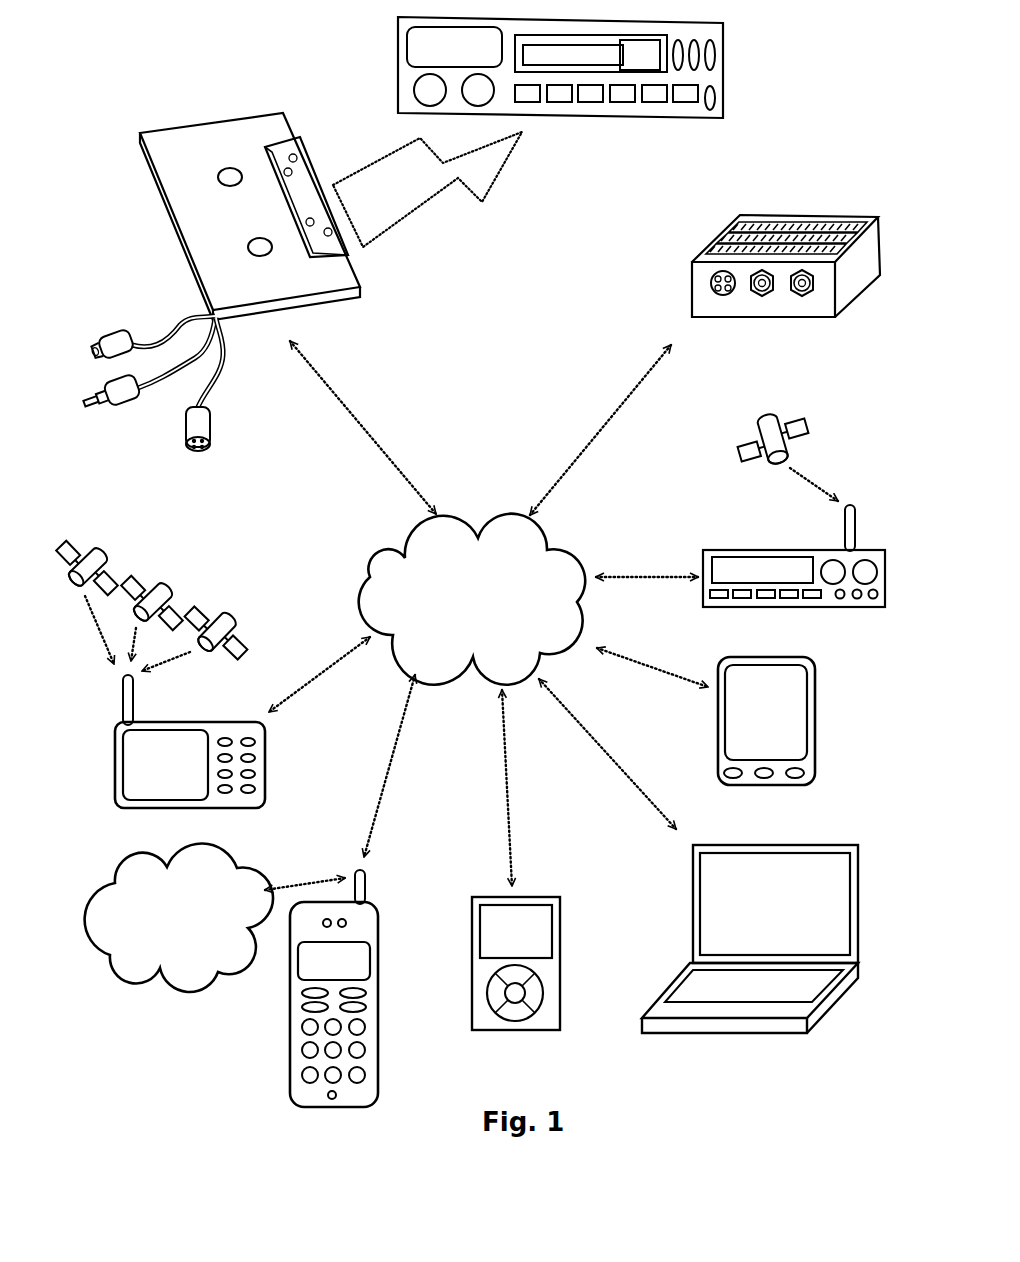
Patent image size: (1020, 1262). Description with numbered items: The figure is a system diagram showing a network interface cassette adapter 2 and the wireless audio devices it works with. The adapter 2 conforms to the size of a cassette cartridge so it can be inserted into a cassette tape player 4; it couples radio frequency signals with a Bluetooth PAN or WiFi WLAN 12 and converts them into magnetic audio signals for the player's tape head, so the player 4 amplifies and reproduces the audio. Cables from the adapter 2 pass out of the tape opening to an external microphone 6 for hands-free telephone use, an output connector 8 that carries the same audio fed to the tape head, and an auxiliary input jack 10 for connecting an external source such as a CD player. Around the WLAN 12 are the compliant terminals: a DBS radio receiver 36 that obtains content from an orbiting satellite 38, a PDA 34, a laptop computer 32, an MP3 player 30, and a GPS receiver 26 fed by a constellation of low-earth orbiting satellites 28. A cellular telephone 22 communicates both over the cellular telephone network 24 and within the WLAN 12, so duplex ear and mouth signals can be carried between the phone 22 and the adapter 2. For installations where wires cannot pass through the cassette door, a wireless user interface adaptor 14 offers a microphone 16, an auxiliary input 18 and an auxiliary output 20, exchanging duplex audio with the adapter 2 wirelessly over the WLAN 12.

The network interface cassette adapter 2 is at (360, 296).
The cassette tape player 4 is at (657, 118).
The external microphone 6 is at (212, 432).
The output connector 8 is at (130, 402).
The auxiliary input jack 10 is at (110, 331).
The wireless local area network 12 is at (400, 558).
The wireless user interface adaptor 14 is at (692, 300).
The microphone 16 is at (710, 300).
The auxiliary input 18 is at (755, 300).
The auxiliary output 20 is at (792, 300).
The cellular telephone 22 is at (290, 1035).
The cellular telephone network 24 is at (138, 982).
The GPS receiver 26 is at (115, 780).
The low-earth orbiting satellites 28 is at (105, 556).
The MP3 player 30 is at (484, 1030).
The laptop computer 32 is at (680, 1033).
The personal digital assistant 34 is at (815, 752).
The DBS radio receiver 36 is at (733, 550).
The orbiting satellite 38 is at (760, 426).